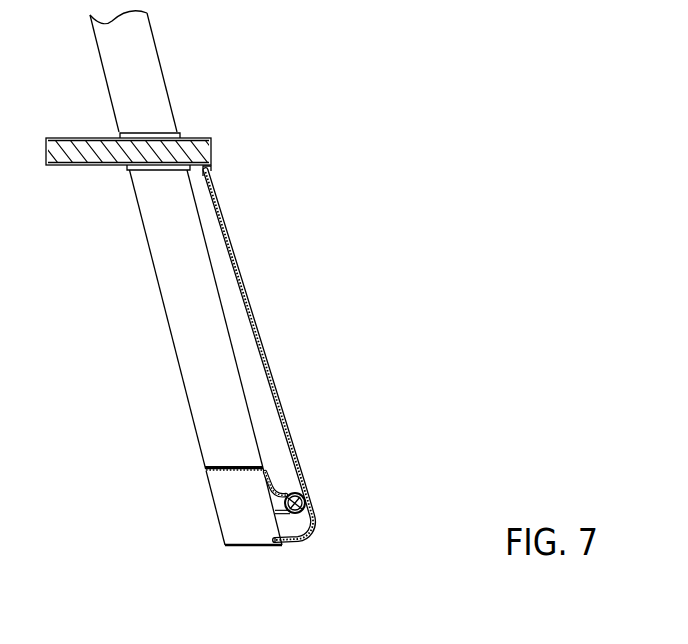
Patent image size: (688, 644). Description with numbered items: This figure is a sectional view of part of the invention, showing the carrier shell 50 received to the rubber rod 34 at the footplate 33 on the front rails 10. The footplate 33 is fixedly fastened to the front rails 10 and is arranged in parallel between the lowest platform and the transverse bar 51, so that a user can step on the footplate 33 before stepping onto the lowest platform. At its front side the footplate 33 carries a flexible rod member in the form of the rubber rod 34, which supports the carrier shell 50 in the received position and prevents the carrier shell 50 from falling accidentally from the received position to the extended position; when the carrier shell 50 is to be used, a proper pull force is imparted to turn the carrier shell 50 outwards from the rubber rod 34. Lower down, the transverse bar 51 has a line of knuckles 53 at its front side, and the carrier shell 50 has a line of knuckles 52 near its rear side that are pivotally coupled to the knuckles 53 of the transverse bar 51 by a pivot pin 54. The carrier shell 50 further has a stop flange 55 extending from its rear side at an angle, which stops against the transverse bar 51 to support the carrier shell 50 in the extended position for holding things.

The front rails 10 is at (172, 328).
The footplate 33 is at (75, 137).
The rubber rod 34 is at (212, 170).
The carrier shell 50 is at (240, 290).
The transverse bar 51 is at (230, 467).
The knuckles 52 is at (307, 497).
The knuckles 53 is at (278, 483).
The pivot pin 54 is at (307, 507).
The stop flange 55 is at (293, 538).